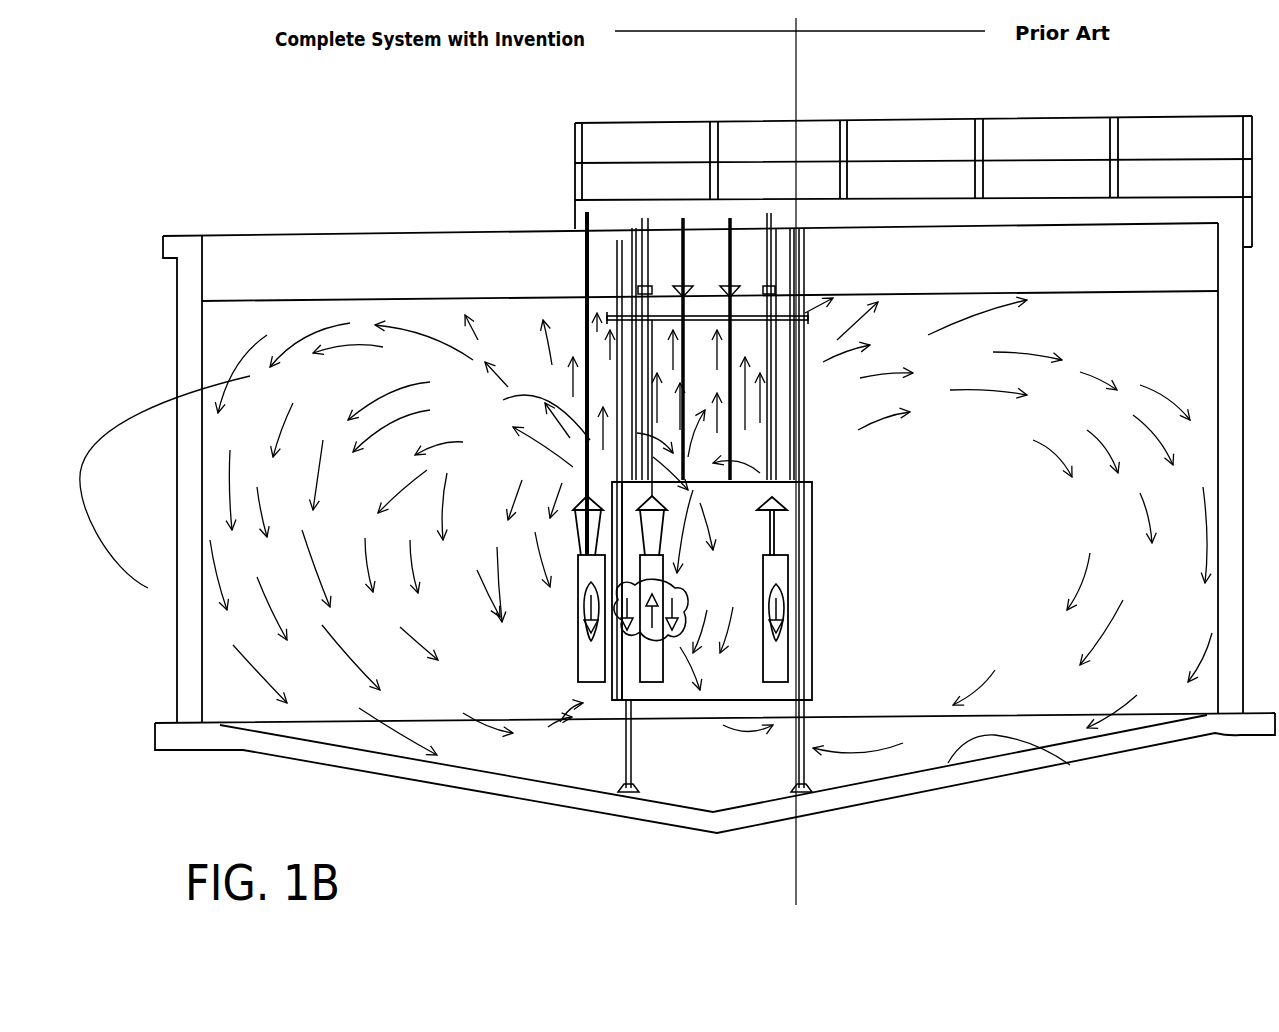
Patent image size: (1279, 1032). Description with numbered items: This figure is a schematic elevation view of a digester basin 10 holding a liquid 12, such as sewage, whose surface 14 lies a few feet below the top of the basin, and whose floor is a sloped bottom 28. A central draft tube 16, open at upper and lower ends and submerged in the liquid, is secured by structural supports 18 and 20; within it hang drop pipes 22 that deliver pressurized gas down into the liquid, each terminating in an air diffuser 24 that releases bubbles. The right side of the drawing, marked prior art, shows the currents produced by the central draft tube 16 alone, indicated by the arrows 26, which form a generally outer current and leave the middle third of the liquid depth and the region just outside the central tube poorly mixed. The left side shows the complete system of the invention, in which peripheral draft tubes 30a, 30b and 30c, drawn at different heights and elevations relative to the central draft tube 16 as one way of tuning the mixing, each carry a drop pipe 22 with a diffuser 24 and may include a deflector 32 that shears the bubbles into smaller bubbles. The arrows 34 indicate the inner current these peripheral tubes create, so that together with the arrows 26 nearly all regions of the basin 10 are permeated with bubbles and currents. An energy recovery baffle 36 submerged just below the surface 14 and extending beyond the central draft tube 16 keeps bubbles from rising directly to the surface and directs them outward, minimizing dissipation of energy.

The digester basin 10 is at (177, 313).
The liquid 12 is at (262, 448).
The surface of the liquid 14 is at (378, 297).
The central draft tube 16 is at (665, 517).
The structural support 18 is at (800, 770).
The structural support 20 is at (620, 270).
The drop pipe 22 is at (531, 415).
The air diffuser 24 is at (668, 621).
The current arrows 26 is at (345, 657).
The sloped bottom 28 is at (1070, 765).
The peripheral draft tube 30a is at (578, 662).
The peripheral draft tube 30b is at (667, 672).
The peripheral draft tube 30c is at (790, 644).
The deflector 32 is at (575, 500).
The current arrows 34 is at (500, 378).
The energy recovery baffle 36 is at (612, 497).